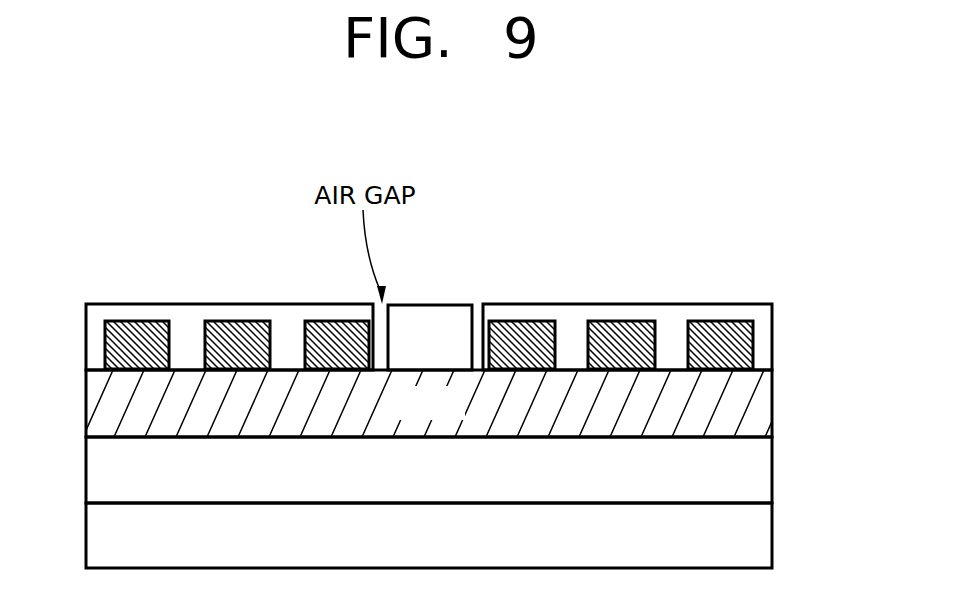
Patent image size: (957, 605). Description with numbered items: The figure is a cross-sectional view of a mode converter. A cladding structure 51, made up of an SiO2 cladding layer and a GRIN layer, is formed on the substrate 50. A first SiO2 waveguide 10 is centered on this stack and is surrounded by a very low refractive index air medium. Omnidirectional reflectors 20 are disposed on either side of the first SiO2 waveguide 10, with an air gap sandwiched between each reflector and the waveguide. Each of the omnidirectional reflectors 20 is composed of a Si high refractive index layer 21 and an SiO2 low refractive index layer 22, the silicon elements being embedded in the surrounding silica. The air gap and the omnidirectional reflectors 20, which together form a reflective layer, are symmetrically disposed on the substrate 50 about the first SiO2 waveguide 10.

The first SiO2 waveguide 10 is at (430, 317).
The omnidirectional reflectors 20 is at (432, 264).
The Si high refractive index layer 21 is at (263, 210).
The SiO2 low refractive index layer 22 is at (285, 333).
The substrate 50 is at (760, 533).
The cladding layer 51 is at (782, 370).